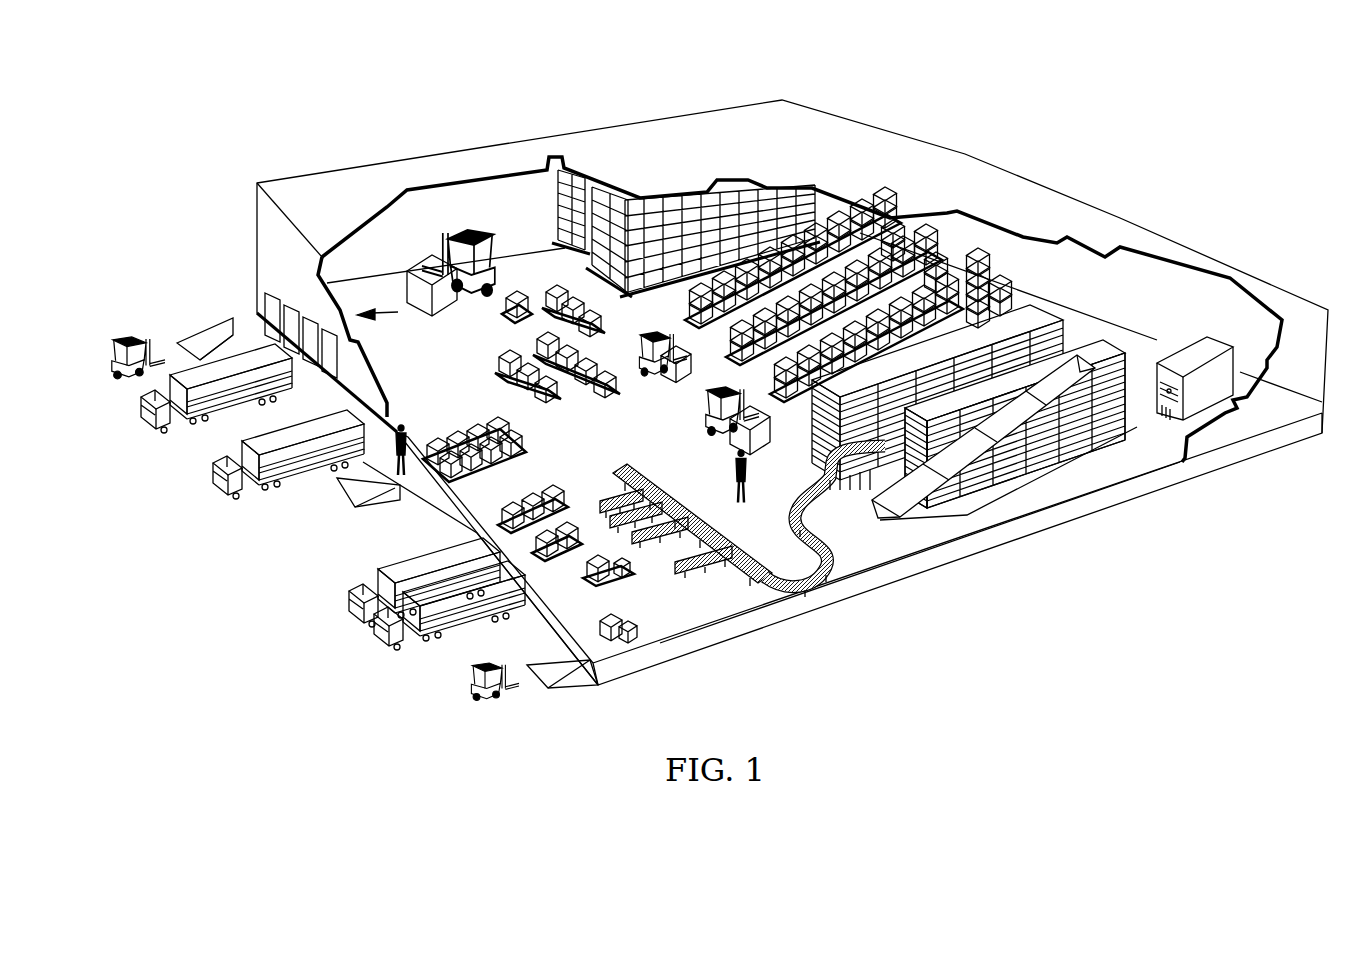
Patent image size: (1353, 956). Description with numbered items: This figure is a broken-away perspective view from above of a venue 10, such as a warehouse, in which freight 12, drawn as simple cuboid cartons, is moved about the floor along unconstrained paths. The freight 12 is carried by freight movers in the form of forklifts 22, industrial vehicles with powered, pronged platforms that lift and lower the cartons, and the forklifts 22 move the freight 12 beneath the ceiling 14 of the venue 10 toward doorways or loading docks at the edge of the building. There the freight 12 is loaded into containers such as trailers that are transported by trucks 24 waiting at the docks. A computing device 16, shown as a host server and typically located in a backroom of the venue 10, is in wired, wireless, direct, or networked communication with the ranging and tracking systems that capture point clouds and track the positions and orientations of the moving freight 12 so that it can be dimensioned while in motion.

The venue 10 is at (970, 148).
The freight 12 is at (438, 303).
The ceiling 14 is at (833, 163).
The computing device 16 is at (1220, 337).
The forklifts 22 is at (482, 230).
The trucks 24 is at (142, 423).